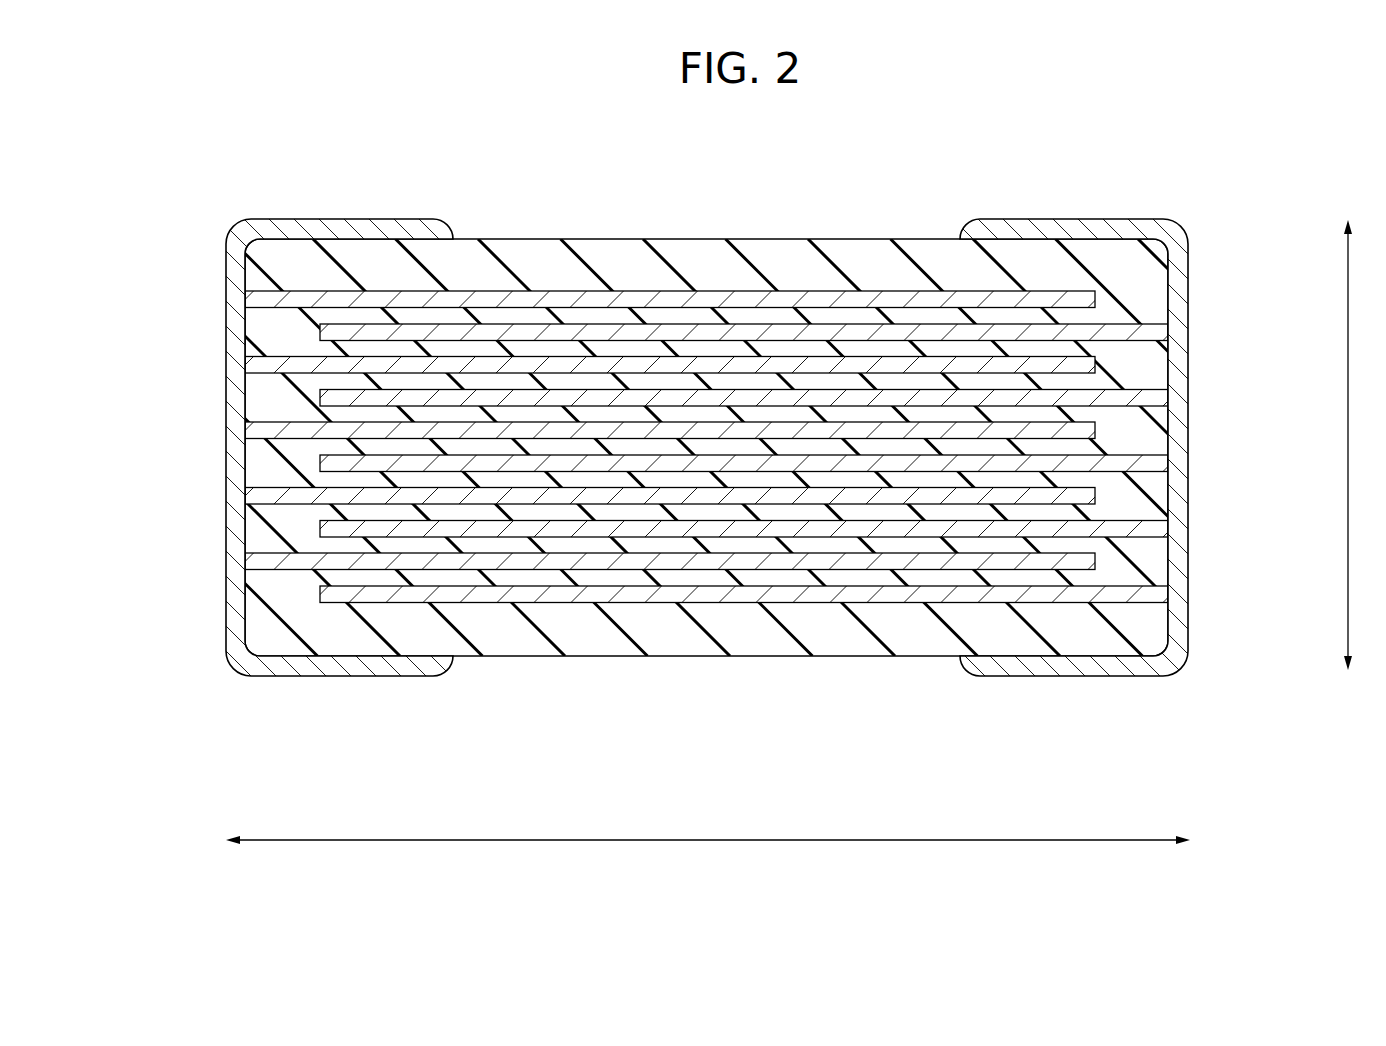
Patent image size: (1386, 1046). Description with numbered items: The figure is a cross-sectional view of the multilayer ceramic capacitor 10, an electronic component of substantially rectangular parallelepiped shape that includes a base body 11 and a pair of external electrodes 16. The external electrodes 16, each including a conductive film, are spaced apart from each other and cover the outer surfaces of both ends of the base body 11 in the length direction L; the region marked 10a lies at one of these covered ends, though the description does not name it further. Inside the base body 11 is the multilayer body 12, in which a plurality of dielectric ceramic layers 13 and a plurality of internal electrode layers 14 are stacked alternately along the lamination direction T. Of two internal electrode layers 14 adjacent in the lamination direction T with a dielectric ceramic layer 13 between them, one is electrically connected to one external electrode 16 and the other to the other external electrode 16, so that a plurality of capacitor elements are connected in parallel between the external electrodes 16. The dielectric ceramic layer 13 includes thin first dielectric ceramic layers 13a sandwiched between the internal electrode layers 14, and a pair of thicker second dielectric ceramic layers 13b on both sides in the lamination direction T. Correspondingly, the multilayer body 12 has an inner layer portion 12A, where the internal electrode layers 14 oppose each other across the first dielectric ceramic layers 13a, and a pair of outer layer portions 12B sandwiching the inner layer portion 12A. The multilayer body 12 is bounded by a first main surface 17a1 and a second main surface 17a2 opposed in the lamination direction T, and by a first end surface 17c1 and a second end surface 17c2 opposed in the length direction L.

The multilayer ceramic capacitor 10 is at (1138, 172).
The end surface of capacitor 10a is at (207, 330).
The base body 11 is at (917, 222).
The multilayer body 12 is at (613, 174).
The inner layer portion 12A is at (551, 282).
The outer layer portion 12B is at (850, 232).
The dielectric ceramic layer 13 is at (633, 260).
The first dielectric ceramic layer 13a is at (698, 577).
The second dielectric ceramic layer 13b is at (787, 263).
The internal electrode layer 14 is at (717, 295).
The external electrode 16 is at (226, 478).
The first main surface 17a1 is at (768, 238).
The second main surface 17a2 is at (755, 657).
The first end surface 17c1 is at (1175, 366).
The second end surface 17c2 is at (226, 400).
The lamination direction T is at (1361, 445).
The length direction L is at (708, 857).